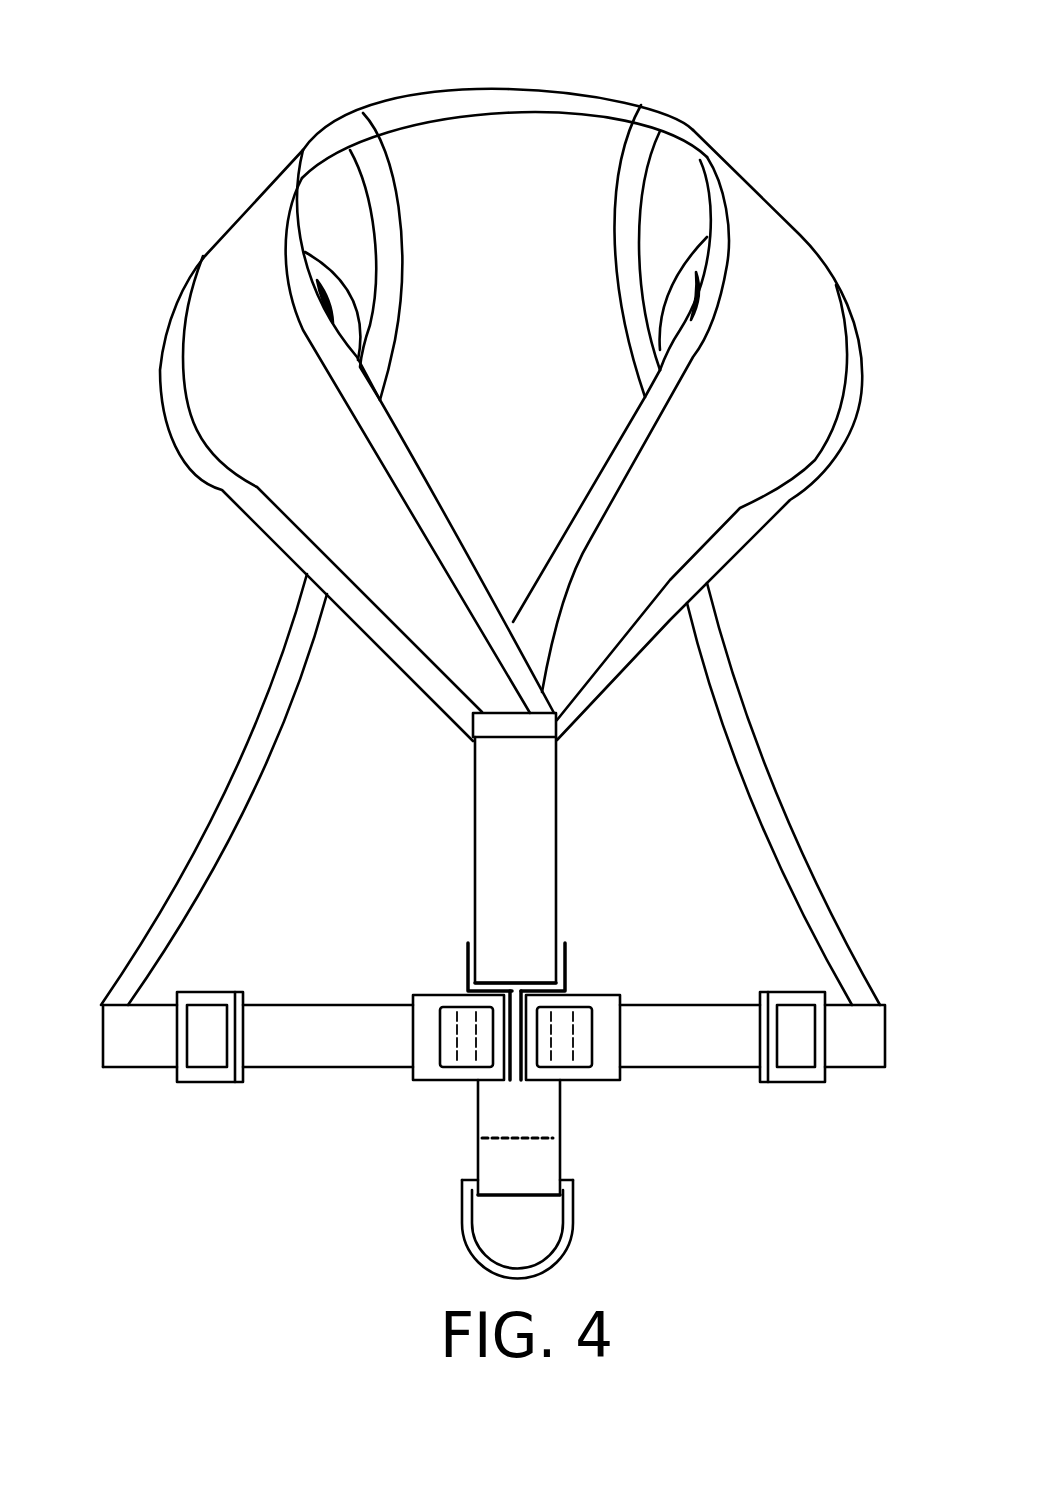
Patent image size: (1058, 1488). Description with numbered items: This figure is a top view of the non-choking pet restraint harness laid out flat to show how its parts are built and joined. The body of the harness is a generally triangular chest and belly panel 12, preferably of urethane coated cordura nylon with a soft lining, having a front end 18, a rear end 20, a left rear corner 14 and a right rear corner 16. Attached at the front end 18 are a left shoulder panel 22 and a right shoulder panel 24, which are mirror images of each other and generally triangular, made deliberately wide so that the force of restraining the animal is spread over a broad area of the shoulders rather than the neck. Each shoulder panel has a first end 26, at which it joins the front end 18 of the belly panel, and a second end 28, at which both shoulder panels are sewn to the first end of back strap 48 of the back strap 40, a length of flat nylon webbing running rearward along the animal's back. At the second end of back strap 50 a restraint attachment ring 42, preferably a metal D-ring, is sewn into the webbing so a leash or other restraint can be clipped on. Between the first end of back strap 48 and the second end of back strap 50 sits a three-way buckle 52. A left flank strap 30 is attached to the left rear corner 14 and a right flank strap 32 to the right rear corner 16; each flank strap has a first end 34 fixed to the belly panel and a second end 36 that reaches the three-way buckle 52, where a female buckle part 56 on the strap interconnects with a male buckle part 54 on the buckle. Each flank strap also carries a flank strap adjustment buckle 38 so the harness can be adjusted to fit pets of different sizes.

The chest and belly panel 12 is at (509, 123).
The left rear corner 14 is at (178, 960).
The right rear corner 16 is at (833, 977).
The front end 18 is at (497, 231).
The rear end 20 is at (634, 877).
The left shoulder panel 22 is at (192, 352).
The right shoulder panel 24 is at (818, 315).
The first end 26 is at (654, 214).
The second end 28 is at (565, 627).
The left flank strap 30 is at (300, 1070).
The right flank strap 32 is at (742, 1058).
The first end 34 is at (878, 1037).
The second end 36 is at (627, 1054).
The flank strap adjustment buckle 38 is at (773, 997).
The back strap 40 is at (488, 852).
The restraint attachment ring 42 is at (578, 1233).
The first end of back strap 48 is at (492, 794).
The second end of back strap 50 is at (557, 1121).
The 3-way buckle 52 is at (463, 979).
The male buckle part 54 is at (460, 1025).
The female buckle part 56 is at (444, 1078).